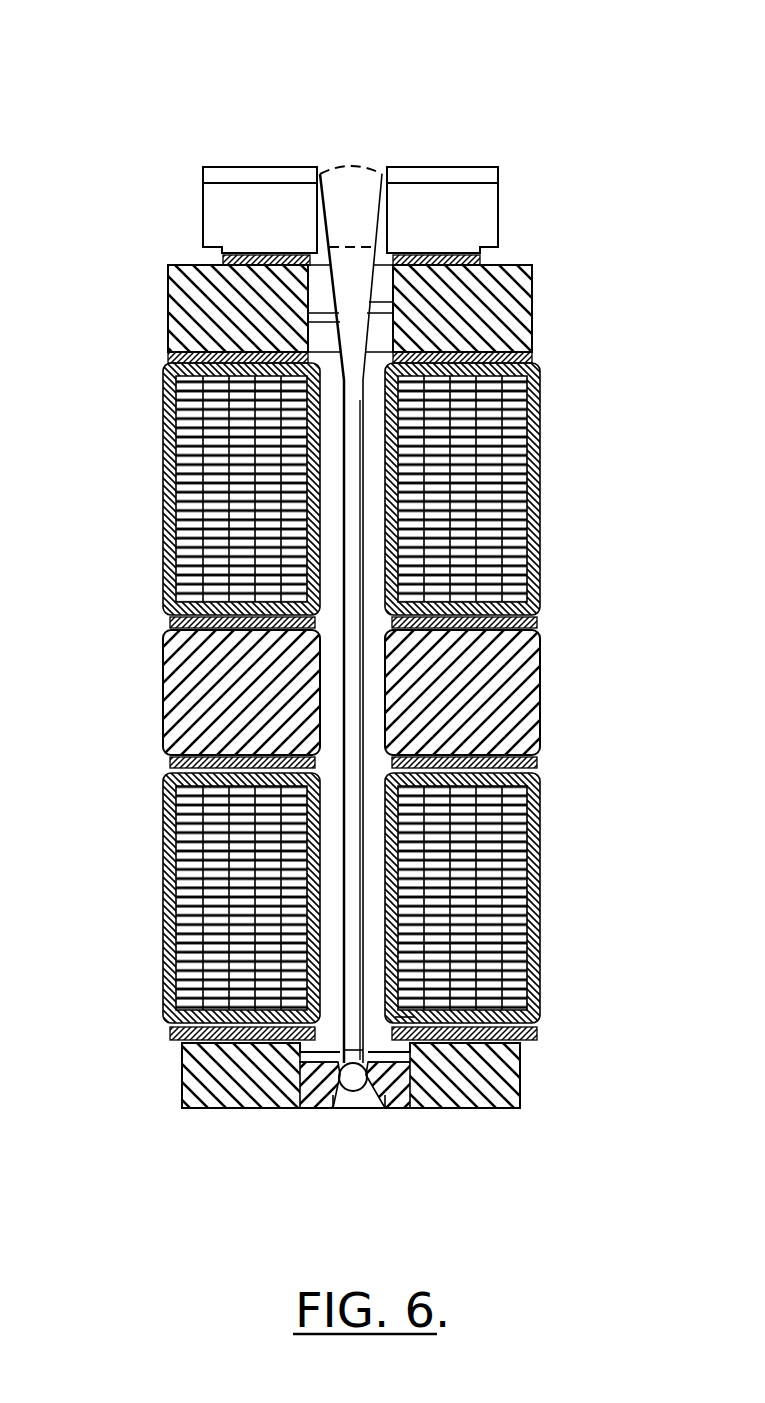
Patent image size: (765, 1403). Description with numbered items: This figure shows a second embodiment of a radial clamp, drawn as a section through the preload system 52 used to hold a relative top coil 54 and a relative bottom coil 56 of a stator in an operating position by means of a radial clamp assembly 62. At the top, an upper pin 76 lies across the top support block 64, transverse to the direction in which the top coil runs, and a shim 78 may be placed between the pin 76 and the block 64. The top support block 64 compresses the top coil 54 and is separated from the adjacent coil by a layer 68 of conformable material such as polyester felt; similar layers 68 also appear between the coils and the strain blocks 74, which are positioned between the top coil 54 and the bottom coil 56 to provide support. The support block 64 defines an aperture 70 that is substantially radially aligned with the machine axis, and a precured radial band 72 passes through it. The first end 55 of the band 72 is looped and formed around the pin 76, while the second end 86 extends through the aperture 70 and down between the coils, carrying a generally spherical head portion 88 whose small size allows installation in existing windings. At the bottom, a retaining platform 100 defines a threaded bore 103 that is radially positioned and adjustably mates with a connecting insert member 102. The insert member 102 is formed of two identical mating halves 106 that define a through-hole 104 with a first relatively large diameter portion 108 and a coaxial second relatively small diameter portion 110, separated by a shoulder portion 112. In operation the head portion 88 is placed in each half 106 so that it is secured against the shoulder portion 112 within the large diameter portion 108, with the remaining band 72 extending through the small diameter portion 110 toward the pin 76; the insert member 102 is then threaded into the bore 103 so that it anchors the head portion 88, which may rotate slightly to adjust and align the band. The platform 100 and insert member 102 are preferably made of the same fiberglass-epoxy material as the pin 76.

The preload system 52 is at (344, 140).
The first end 55 is at (352, 197).
The radial clamp assembly 62 is at (361, 161).
The precured radial band 72 is at (353, 432).
The upper pin 76 is at (215, 222).
The shim 78 is at (497, 252).
The top support block 64 is at (168, 325).
The aperture 70 is at (380, 302).
The layer of conformable material 68 is at (168, 362).
The top coil 54 is at (163, 492).
The strain block 74 is at (168, 720).
The bottom coil 56 is at (163, 912).
The second end 86 is at (347, 1048).
The head portion 88 is at (413, 1017).
The retaining platform 100 is at (477, 1072).
The connecting insert member 102 is at (453, 1108).
The bore 103 is at (183, 1060).
The through-hole 104 is at (366, 1110).
The mating halves 106 is at (388, 1110).
The first relatively large diameter portion 108 is at (350, 1108).
The second relatively small diameter portion 110 is at (182, 1100).
The shoulder portion 112 is at (337, 1110).